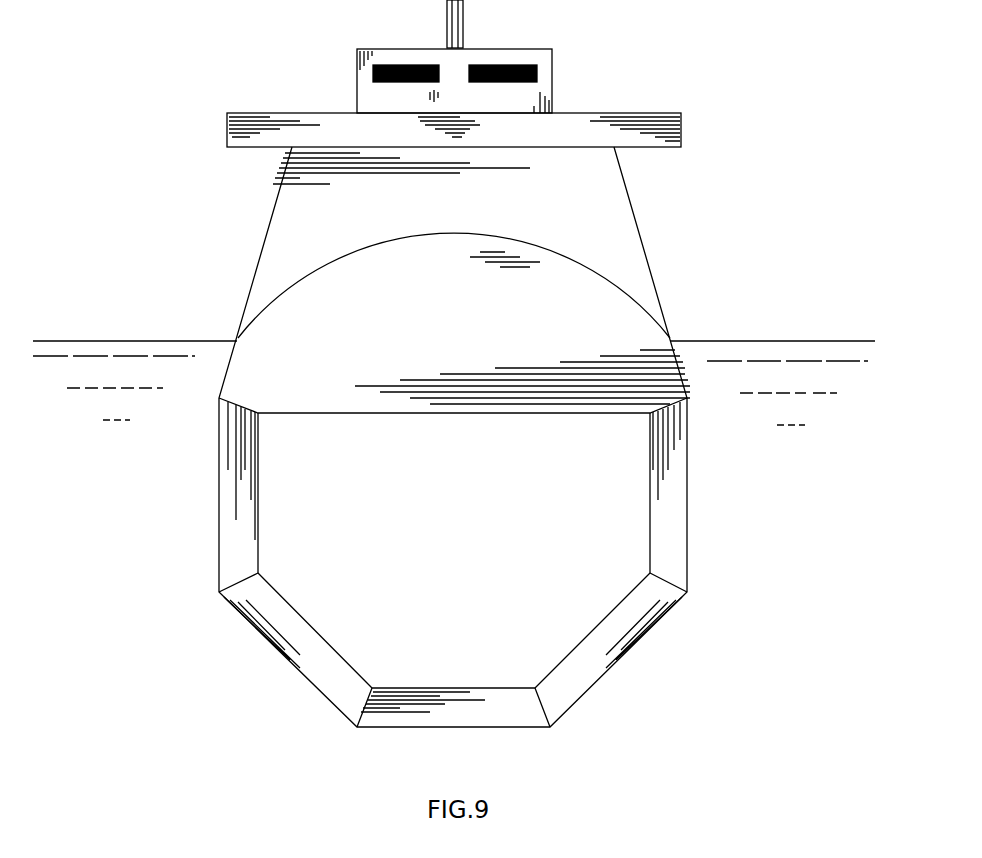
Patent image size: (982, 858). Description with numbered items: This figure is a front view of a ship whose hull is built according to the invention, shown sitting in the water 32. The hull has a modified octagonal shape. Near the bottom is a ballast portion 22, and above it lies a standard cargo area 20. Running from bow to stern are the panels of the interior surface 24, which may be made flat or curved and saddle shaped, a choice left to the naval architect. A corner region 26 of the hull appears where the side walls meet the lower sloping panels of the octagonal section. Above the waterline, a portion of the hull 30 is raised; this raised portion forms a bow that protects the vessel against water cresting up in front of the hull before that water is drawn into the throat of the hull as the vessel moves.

The cargo area 20 is at (315, 379).
The ballast portion 22 is at (525, 721).
The interior surface 24 is at (258, 520).
The chine corner 26 is at (219, 567).
The portion of the hull 30 is at (463, 337).
The water 32 is at (786, 482).